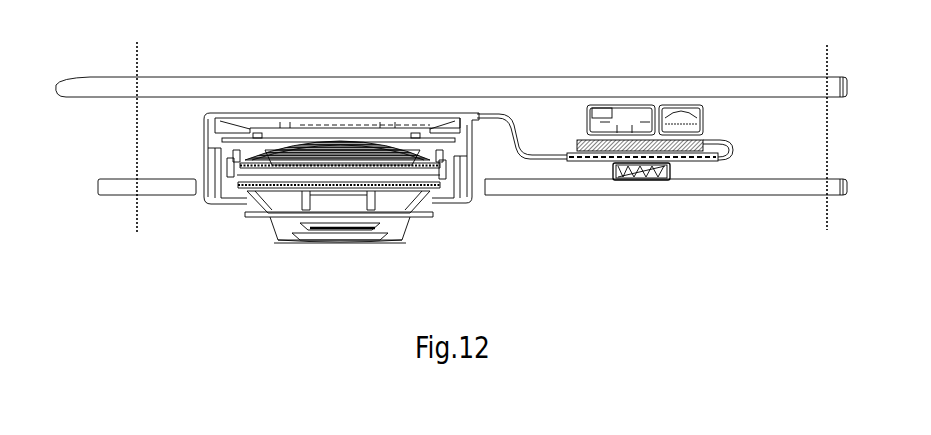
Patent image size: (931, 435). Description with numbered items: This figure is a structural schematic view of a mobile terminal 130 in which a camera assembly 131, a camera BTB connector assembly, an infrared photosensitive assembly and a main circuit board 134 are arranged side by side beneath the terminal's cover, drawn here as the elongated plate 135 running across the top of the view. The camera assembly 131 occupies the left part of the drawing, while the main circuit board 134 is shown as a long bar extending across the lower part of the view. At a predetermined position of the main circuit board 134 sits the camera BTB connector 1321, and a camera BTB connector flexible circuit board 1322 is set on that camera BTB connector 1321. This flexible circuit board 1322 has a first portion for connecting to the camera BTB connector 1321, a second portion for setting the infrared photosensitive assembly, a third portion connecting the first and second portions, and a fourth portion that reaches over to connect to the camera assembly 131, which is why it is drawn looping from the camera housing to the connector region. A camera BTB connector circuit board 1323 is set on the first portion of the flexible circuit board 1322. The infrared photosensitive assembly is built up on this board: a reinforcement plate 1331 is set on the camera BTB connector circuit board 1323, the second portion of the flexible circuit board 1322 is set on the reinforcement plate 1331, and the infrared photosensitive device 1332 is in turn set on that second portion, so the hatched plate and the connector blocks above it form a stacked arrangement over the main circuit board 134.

The mobile terminal 130 is at (135, 135).
The camera assembly 131 is at (337, 172).
The main circuit board 134 is at (797, 190).
The top plate 135 is at (176, 90).
The camera BTB connector 1321 is at (642, 180).
The camera BTB connector flexible circuit board 1322 is at (517, 145).
The camera BTB connector circuit board 1323 is at (587, 161).
The reinforcement plate 1331 is at (585, 145).
The infrared photosensitive device 1332 is at (627, 115).